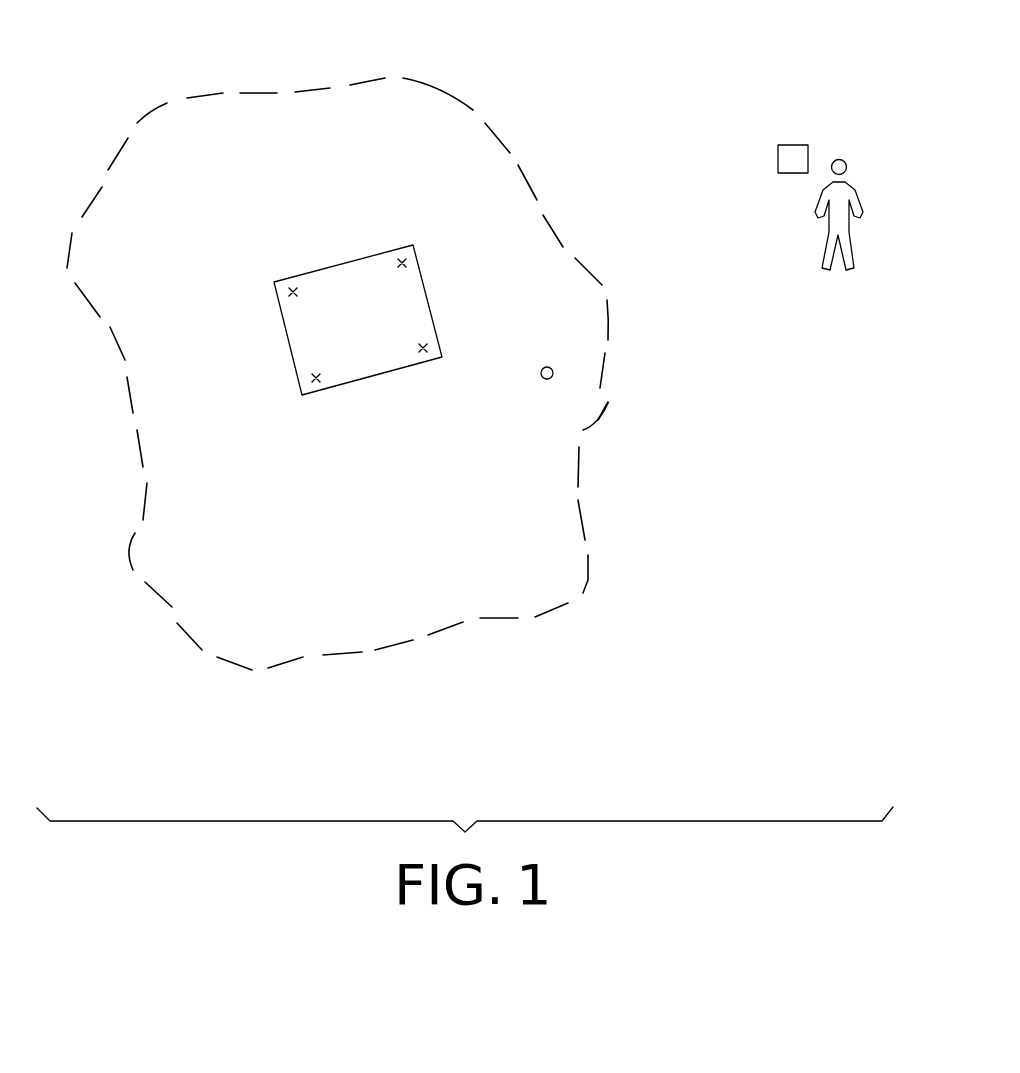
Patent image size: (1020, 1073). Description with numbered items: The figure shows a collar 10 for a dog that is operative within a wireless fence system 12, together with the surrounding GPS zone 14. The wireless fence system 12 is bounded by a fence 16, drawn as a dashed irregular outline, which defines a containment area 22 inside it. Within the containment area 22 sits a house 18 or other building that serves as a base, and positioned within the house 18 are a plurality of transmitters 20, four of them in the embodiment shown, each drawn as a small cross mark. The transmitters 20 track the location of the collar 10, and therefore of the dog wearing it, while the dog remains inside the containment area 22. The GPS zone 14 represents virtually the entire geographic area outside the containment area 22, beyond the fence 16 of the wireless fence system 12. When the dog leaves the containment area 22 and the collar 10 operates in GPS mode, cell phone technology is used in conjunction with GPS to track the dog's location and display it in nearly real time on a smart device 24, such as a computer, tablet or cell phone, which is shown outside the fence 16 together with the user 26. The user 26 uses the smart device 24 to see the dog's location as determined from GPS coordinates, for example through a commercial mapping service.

The collar 10 is at (554, 373).
The wireless fence system 12 is at (352, 131).
The GPS zone 14 is at (650, 84).
The fence 16 is at (588, 580).
The house 18 is at (320, 262).
The transmitter 20 is at (413, 263).
The containment area 22 is at (371, 546).
The smart device 24 is at (778, 158).
The user 26 is at (822, 252).